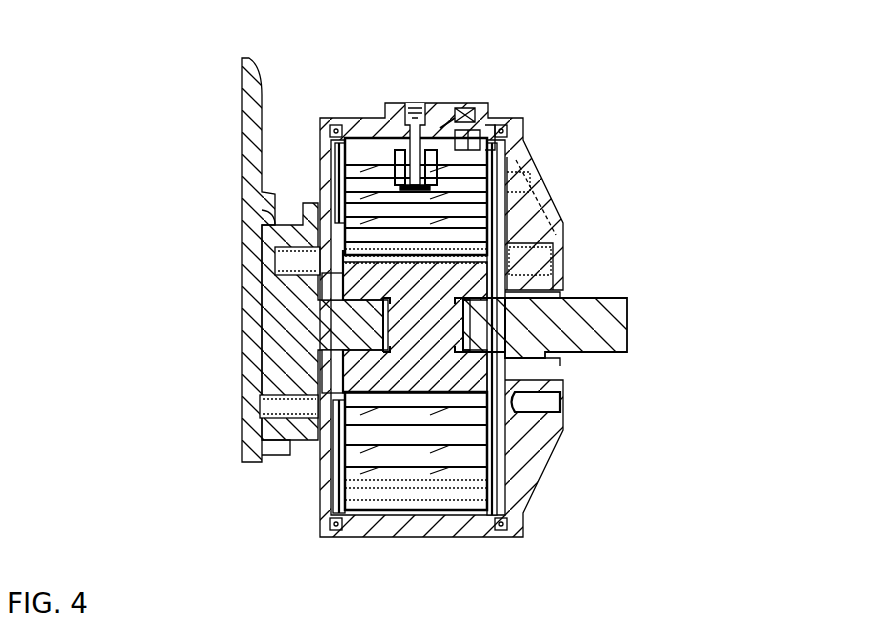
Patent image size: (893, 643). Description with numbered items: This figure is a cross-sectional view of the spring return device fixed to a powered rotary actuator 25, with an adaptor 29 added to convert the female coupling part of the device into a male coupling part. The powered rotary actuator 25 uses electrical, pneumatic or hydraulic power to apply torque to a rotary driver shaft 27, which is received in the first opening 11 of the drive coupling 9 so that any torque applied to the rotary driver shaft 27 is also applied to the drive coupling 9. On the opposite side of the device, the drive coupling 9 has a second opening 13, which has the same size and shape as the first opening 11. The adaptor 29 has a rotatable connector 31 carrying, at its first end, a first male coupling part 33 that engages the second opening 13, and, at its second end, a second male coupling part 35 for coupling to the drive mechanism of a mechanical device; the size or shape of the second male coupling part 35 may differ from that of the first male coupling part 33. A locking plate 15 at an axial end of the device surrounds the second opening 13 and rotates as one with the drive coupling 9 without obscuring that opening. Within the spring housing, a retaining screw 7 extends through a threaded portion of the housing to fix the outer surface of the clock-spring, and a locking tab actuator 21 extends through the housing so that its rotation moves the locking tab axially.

The retaining screw 7 is at (412, 102).
The locking tab actuator 21 is at (467, 108).
The locking plate 15 is at (497, 212).
The adaptor 29 is at (565, 227).
The rotatable connector 31 is at (545, 313).
The second male coupling part 35 is at (607, 329).
The second opening 13 is at (465, 318).
The first male coupling part 33 is at (483, 337).
The drive coupling 9 is at (428, 347).
The powered rotary actuator 25 is at (244, 193).
The rotary driver shaft 27 is at (342, 319).
The first opening 11 is at (383, 328).